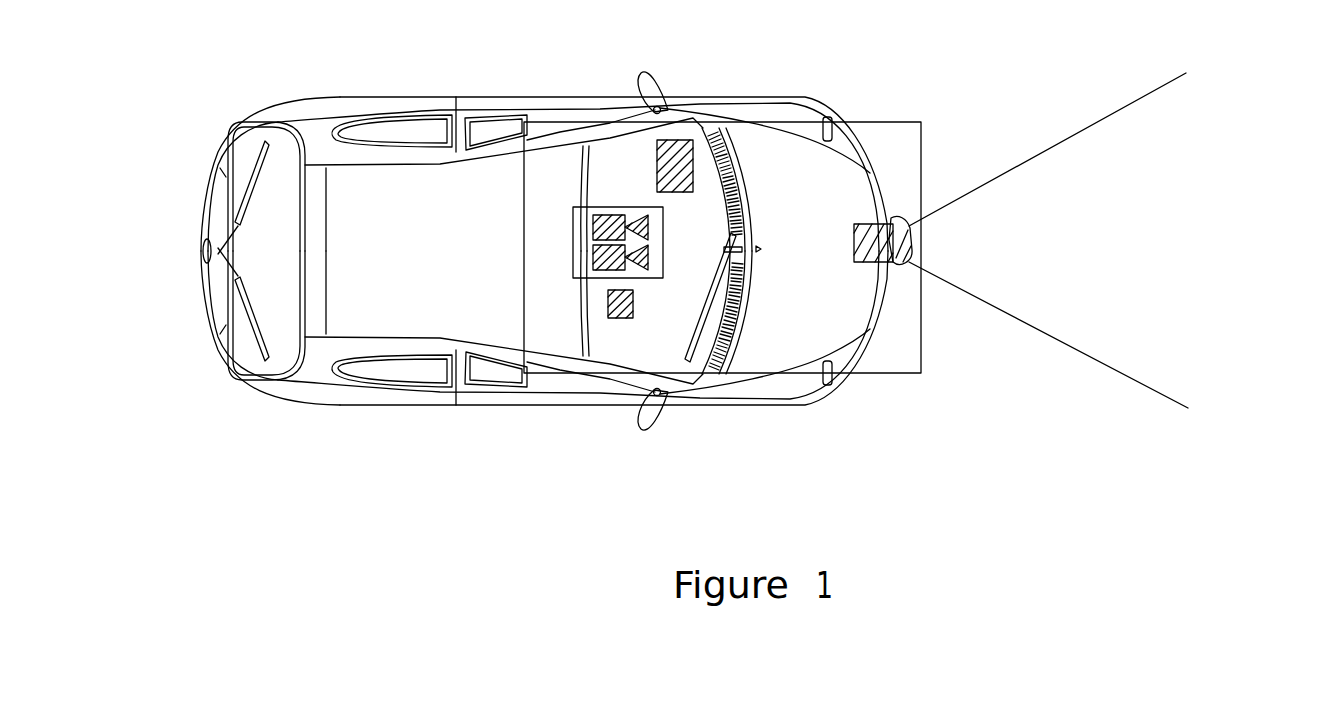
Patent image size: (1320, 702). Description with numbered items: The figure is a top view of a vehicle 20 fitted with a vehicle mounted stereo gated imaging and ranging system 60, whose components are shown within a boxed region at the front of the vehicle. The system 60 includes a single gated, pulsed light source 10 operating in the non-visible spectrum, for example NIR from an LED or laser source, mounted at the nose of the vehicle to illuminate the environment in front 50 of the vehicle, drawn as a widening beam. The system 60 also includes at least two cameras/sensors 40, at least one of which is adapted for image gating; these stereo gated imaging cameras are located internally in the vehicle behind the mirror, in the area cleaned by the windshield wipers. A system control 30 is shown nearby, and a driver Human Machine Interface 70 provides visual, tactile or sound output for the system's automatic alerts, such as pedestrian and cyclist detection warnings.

The gated light source 10 is at (892, 223).
The vehicle 20 is at (417, 193).
The system control 30 is at (636, 310).
The cameras/sensors 40 is at (613, 207).
The environment in front of the vehicle 50 is at (1205, 73).
The stereo gated imaging and ranging system 60 is at (923, 347).
The driver Human Machine Interface (HMI) 70 is at (676, 140).